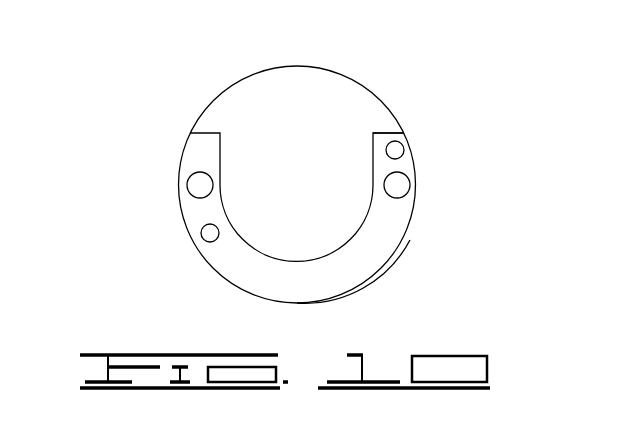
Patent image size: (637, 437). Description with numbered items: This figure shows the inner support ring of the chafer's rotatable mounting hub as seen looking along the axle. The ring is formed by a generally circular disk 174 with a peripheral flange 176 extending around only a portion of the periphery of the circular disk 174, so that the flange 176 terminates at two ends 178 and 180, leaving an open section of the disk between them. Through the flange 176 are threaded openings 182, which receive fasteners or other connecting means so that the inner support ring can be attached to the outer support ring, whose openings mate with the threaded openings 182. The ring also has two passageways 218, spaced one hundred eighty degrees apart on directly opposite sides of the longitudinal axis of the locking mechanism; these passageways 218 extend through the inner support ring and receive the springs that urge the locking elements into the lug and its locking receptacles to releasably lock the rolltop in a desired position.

The circular disk 174 is at (278, 76).
The peripheral flange 176 is at (363, 278).
The end of flange 178 is at (388, 133).
The end of flange 180 is at (207, 133).
The threaded openings 182 is at (398, 150).
The passageways 218 is at (401, 186).